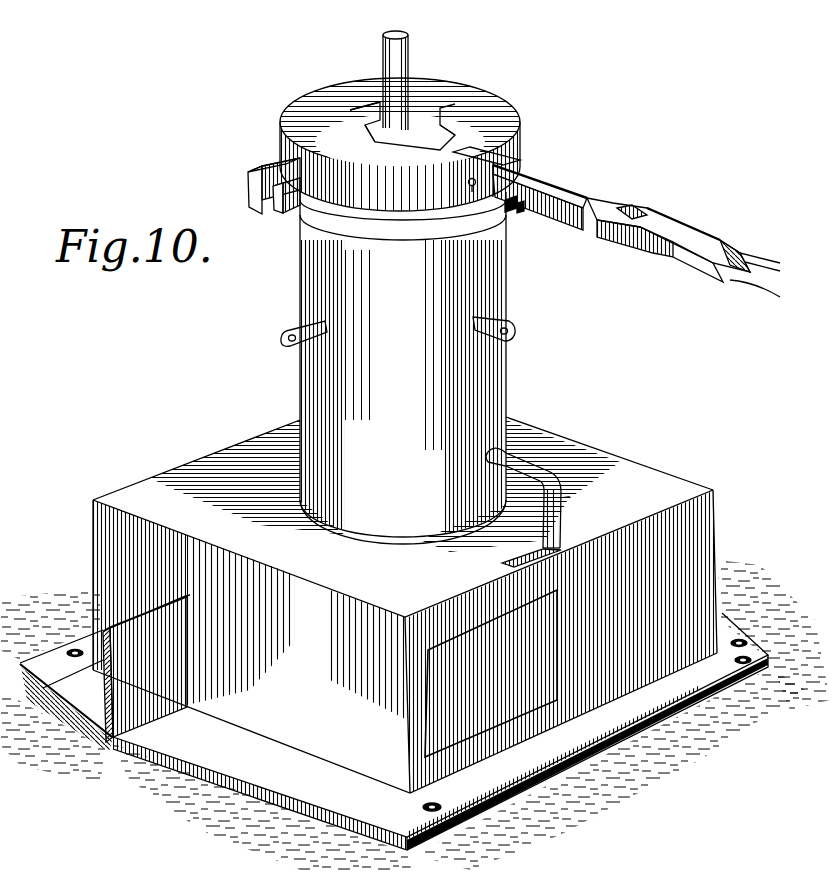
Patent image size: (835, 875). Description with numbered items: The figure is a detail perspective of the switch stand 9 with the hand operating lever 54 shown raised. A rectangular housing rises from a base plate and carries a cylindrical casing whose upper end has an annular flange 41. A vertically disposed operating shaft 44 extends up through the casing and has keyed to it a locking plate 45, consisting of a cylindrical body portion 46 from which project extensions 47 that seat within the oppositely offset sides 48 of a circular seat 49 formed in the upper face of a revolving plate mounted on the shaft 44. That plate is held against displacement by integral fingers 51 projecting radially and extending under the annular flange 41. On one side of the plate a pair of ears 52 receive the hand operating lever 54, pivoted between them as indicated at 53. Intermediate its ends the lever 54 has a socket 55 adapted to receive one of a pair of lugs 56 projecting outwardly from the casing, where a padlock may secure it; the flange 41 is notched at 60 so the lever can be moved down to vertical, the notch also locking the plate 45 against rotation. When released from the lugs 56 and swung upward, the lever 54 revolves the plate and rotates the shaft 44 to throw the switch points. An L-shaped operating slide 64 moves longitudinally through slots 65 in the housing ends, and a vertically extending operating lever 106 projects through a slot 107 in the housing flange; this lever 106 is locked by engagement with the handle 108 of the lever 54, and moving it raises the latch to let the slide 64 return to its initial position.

The switch stand 9 is at (352, 781).
The annular flange 41 is at (383, 233).
The operating shaft 44 is at (407, 54).
The locking plate 45 is at (417, 123).
The cylindrical body portion 46 is at (430, 137).
The extensions 47 is at (500, 122).
The oppositely offset sides 48 is at (367, 110).
The circular seat 49 is at (377, 143).
The integral fingers 51 is at (250, 170).
The ears 52 is at (473, 162).
The pivot 53 is at (495, 212).
The hand operating lever 54 is at (567, 192).
The socket 55 is at (645, 211).
The lugs 56 is at (285, 341).
The notch 60 is at (519, 206).
The operating slide 64 is at (112, 742).
The slots 65 is at (190, 630).
The operating lever 106 is at (562, 530).
The slot 107 is at (502, 563).
The handle 108 is at (750, 270).